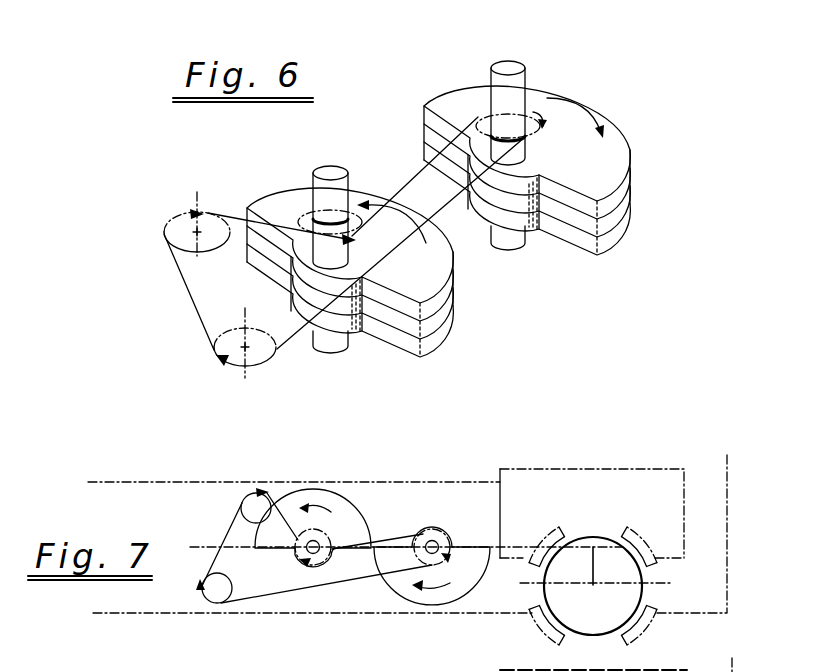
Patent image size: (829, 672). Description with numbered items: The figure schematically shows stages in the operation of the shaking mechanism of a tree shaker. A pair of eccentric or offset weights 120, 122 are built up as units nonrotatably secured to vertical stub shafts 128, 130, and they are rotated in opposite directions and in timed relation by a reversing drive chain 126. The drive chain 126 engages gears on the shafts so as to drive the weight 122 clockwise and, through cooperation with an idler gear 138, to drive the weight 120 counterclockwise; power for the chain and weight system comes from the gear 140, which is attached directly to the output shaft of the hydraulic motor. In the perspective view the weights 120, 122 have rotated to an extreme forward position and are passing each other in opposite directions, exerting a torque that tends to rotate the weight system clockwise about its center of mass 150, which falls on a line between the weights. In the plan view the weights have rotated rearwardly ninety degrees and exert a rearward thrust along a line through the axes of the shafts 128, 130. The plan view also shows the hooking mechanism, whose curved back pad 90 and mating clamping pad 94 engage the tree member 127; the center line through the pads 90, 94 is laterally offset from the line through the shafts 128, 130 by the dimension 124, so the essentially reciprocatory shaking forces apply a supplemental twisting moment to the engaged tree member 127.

In FIG. 6, the eccentric weight 120 is at (437, 341).
In FIG. 7, the eccentric weight 120 is at (356, 532).
In FIG. 6, the eccentric weight 122 is at (449, 97).
In FIG. 7, the eccentric weight 122 is at (469, 579).
In FIG. 6, the vertical stub shaft 128 is at (334, 168).
In FIG. 6, the vertical stub shaft 130 is at (512, 64).
In FIG. 6, the reversing drive chain 126 is at (187, 286).
In FIG. 6, the idler gear 138 is at (220, 252).
In FIG. 7, the idler gear 138 is at (250, 523).
In FIG. 6, the gear 140 is at (227, 333).
In FIG. 7, the gear 140 is at (229, 576).
In FIG. 6, the center of mass 150 is at (490, 276).
In FIG. 7, the back pad 90 is at (559, 524).
In FIG. 7, the clamping pad 94 is at (644, 532).
In FIG. 7, the lateral offset dimension 124 is at (595, 564).
In FIG. 7, the tree member 127 is at (594, 635).